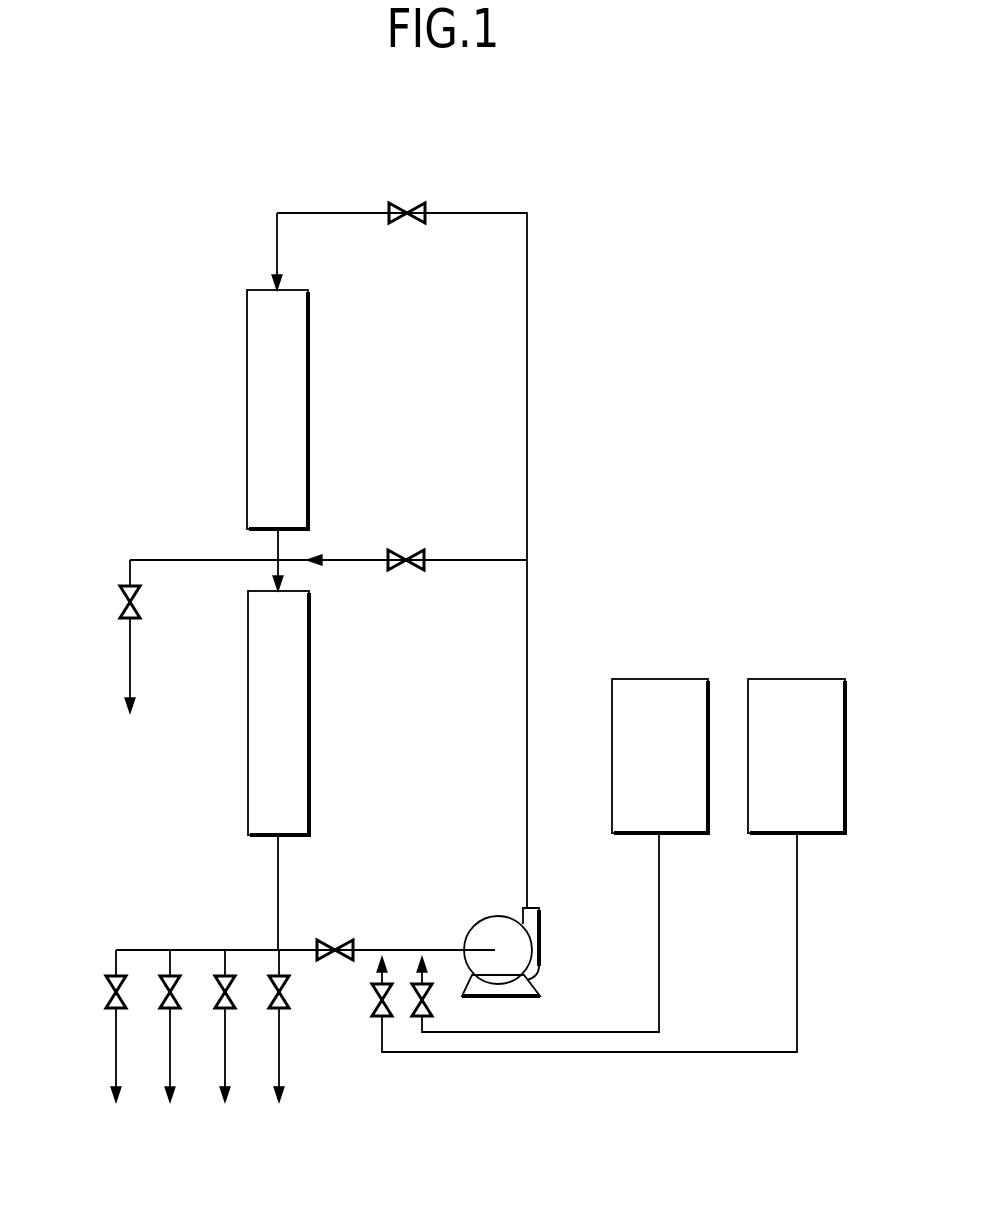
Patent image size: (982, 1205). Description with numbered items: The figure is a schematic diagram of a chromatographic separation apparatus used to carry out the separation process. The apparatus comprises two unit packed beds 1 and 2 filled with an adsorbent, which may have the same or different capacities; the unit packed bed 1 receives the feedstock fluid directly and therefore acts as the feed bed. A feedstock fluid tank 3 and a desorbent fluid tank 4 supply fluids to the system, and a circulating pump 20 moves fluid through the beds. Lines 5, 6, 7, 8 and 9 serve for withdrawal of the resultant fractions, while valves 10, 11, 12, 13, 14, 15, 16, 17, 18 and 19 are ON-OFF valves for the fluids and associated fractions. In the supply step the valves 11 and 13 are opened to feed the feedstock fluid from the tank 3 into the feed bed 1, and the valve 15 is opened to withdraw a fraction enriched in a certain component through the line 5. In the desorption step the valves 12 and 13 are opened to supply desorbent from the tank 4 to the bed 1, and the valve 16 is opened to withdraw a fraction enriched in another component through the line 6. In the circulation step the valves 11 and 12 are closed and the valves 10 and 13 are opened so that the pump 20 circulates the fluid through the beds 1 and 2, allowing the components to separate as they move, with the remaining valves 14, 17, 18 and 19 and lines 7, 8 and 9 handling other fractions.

The unit packed bed 1 is at (248, 350).
The unit packed bed 2 is at (248, 813).
The feedstock fluid tank 3 is at (640, 678).
The desorbent fluid tank 4 is at (776, 678).
The line 5 is at (278, 1116).
The line 6 is at (224, 1116).
The line 7 is at (169, 1116).
The line 8 is at (115, 1116).
The line 9 is at (129, 685).
The valve 10 is at (332, 939).
The valve 11 is at (432, 1012).
The valve 12 is at (375, 990).
The valve 13 is at (410, 224).
The valve 14 is at (410, 571).
The valve 15 is at (284, 1006).
The valve 16 is at (230, 1006).
The valve 17 is at (175, 1006).
The valve 18 is at (121, 1006).
The valve 19 is at (134, 616).
The circulating pump 20 is at (541, 950).